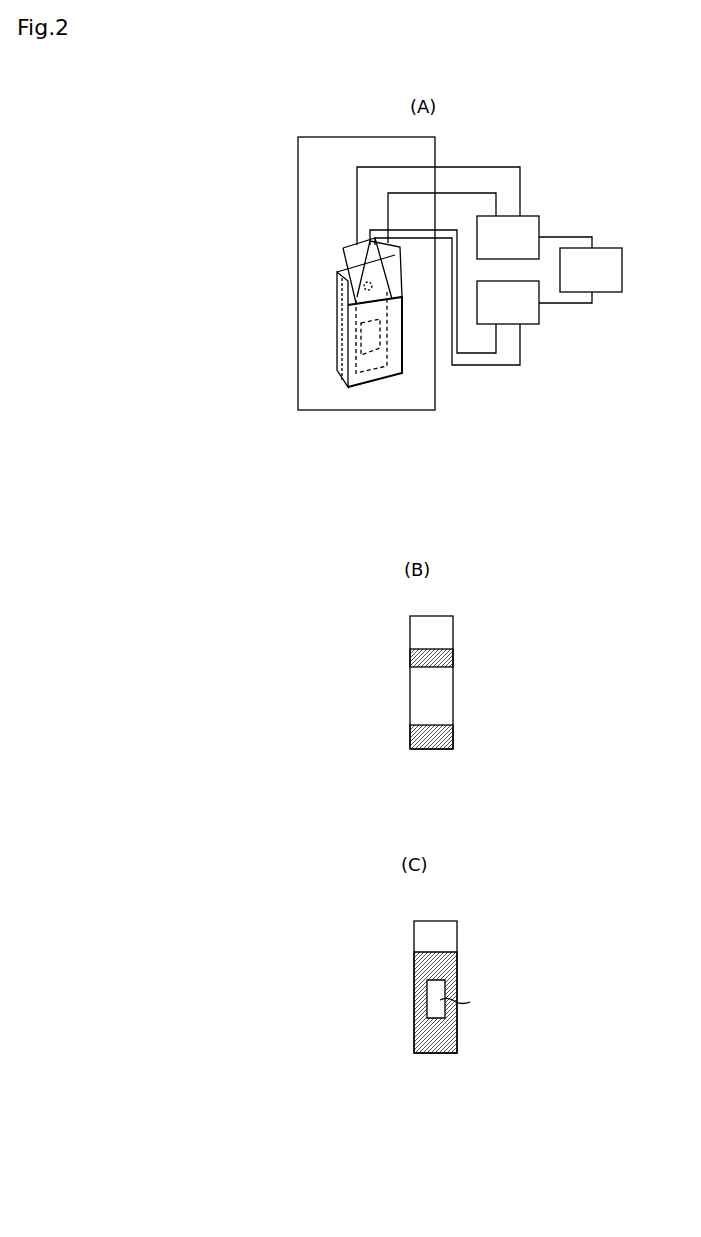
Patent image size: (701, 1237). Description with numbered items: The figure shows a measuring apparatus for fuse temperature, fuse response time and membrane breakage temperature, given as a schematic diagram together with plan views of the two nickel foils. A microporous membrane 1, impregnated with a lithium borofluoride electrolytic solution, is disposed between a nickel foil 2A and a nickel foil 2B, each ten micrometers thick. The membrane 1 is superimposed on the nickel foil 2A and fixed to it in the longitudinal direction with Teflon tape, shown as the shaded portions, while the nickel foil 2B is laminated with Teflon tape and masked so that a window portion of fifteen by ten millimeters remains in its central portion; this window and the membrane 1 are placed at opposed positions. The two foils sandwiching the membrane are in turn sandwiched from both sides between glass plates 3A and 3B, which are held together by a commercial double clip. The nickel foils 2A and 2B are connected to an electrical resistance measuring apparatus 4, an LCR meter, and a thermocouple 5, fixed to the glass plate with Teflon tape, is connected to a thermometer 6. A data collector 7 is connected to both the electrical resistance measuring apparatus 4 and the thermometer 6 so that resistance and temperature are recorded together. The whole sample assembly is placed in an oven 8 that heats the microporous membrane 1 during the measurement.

The microporous membrane 1 is at (372, 340).
The nickel foil 2A is at (352, 246).
The nickel foil 2B is at (400, 248).
The glass plate 3A is at (346, 312).
The glass plate 3B is at (347, 357).
The electrical resistance measuring apparatus 4 is at (531, 215).
The thermocouple 5 is at (376, 284).
The thermometer 6 is at (531, 325).
The data collector 7 is at (611, 247).
The oven 8 is at (363, 411).